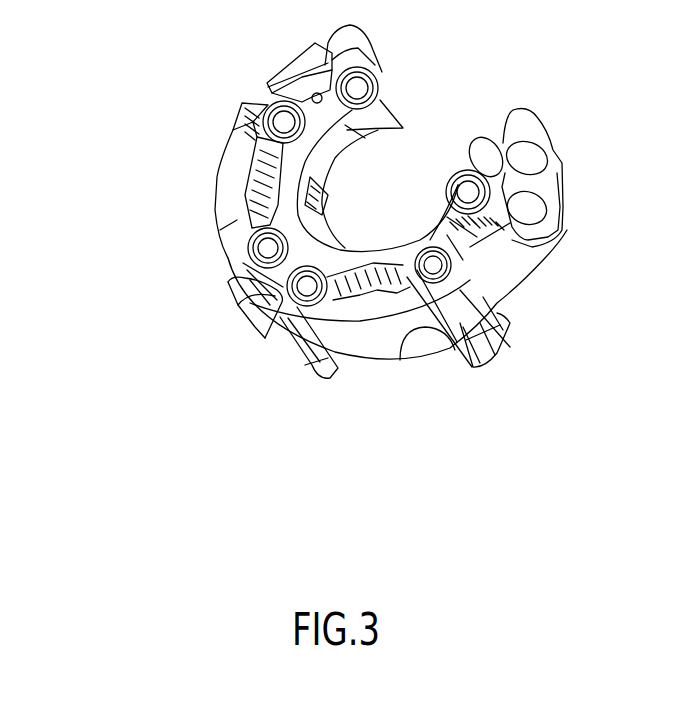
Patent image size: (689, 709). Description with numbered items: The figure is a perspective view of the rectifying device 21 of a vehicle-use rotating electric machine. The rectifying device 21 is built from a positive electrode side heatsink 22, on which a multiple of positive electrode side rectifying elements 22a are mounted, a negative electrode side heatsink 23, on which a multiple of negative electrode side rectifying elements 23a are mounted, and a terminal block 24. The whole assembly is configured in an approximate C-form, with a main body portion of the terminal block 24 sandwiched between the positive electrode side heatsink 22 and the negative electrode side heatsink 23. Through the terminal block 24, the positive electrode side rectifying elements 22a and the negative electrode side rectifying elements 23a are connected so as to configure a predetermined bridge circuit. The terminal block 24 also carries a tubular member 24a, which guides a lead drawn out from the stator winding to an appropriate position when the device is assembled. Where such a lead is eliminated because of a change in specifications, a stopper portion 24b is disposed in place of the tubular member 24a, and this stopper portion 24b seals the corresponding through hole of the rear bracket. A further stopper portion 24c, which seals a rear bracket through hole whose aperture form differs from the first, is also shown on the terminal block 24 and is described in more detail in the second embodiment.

The rectifying device 21 is at (77, 430).
The positive electrode side heatsink 22 is at (378, 130).
The positive electrode side rectifying elements 22a is at (265, 102).
The negative electrode side heatsink 23 is at (233, 183).
The negative electrode side rectifying elements 23a is at (250, 203).
The terminal block 24 is at (483, 307).
The tubular member 24a is at (228, 282).
The stopper portion 24b is at (303, 372).
The stopper portion 24c is at (513, 327).